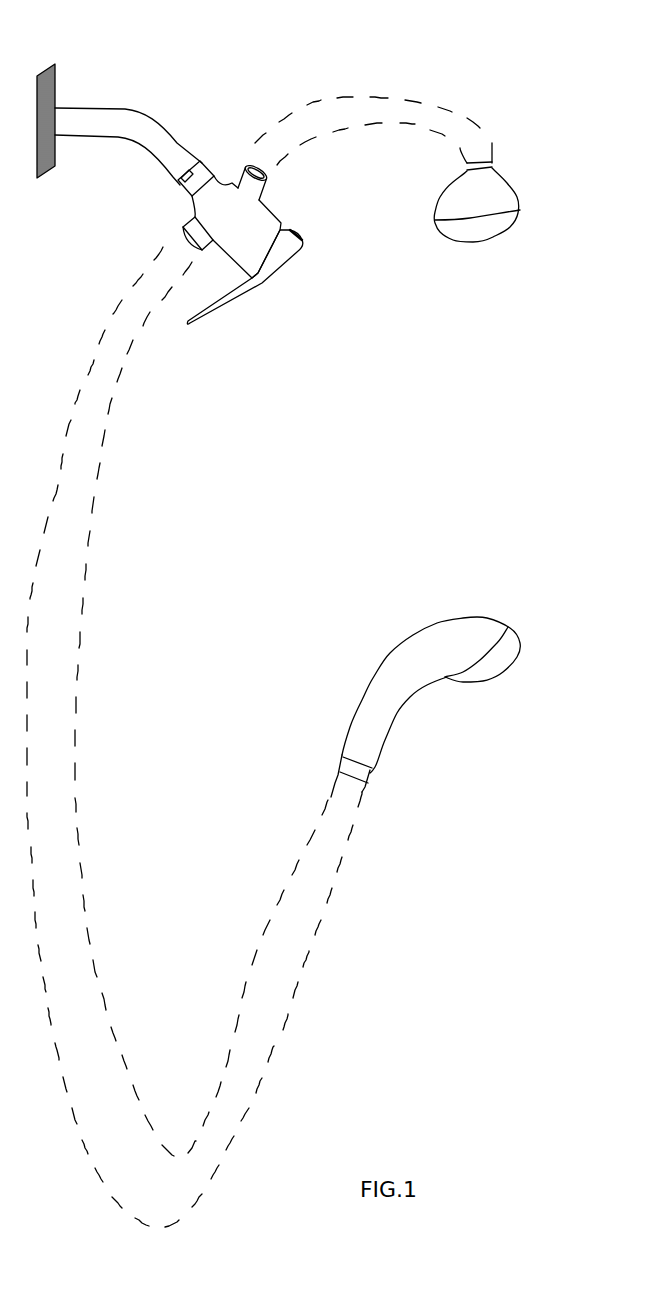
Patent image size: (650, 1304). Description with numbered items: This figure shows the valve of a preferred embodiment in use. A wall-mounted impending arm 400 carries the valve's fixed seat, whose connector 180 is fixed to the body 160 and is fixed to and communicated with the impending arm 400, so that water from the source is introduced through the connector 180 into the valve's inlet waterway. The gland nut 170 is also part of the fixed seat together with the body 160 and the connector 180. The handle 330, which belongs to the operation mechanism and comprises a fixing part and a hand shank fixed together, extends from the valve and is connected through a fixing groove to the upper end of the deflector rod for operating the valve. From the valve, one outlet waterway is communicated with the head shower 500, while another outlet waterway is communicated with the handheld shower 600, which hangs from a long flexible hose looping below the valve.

The impending arm 400 is at (128, 122).
The connector 180 is at (194, 172).
The body 160 is at (213, 212).
The gland nut 170 is at (261, 229).
The handle 330 is at (282, 250).
The head shower 500 is at (483, 203).
The handheld shower 600 is at (383, 700).